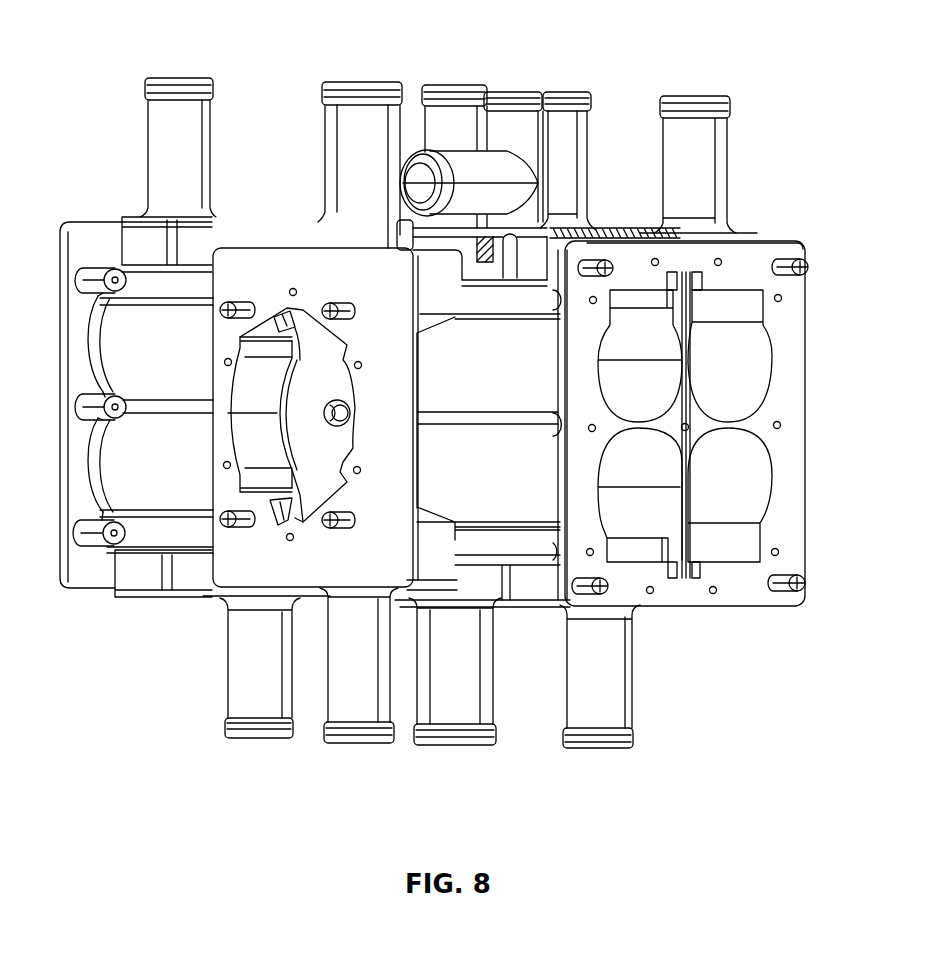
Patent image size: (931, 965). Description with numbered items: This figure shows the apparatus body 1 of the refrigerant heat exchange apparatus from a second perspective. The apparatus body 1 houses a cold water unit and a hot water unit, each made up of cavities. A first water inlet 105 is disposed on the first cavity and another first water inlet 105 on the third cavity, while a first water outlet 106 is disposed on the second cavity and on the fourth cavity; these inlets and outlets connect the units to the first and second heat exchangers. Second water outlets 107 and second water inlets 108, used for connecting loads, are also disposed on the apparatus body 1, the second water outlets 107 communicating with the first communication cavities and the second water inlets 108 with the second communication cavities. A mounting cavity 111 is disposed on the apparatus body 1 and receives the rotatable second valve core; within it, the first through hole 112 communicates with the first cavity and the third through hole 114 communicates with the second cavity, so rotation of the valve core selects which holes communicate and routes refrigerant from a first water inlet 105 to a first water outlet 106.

The apparatus body 1 is at (807, 340).
The first water inlet 105 is at (402, 84).
The first water outlet 106 is at (357, 743).
The second water outlet 107 is at (213, 100).
The second water inlet 108 is at (228, 738).
The mounting cavity 111 is at (250, 455).
The first through hole 112 is at (273, 314).
The third through hole 114 is at (282, 507).